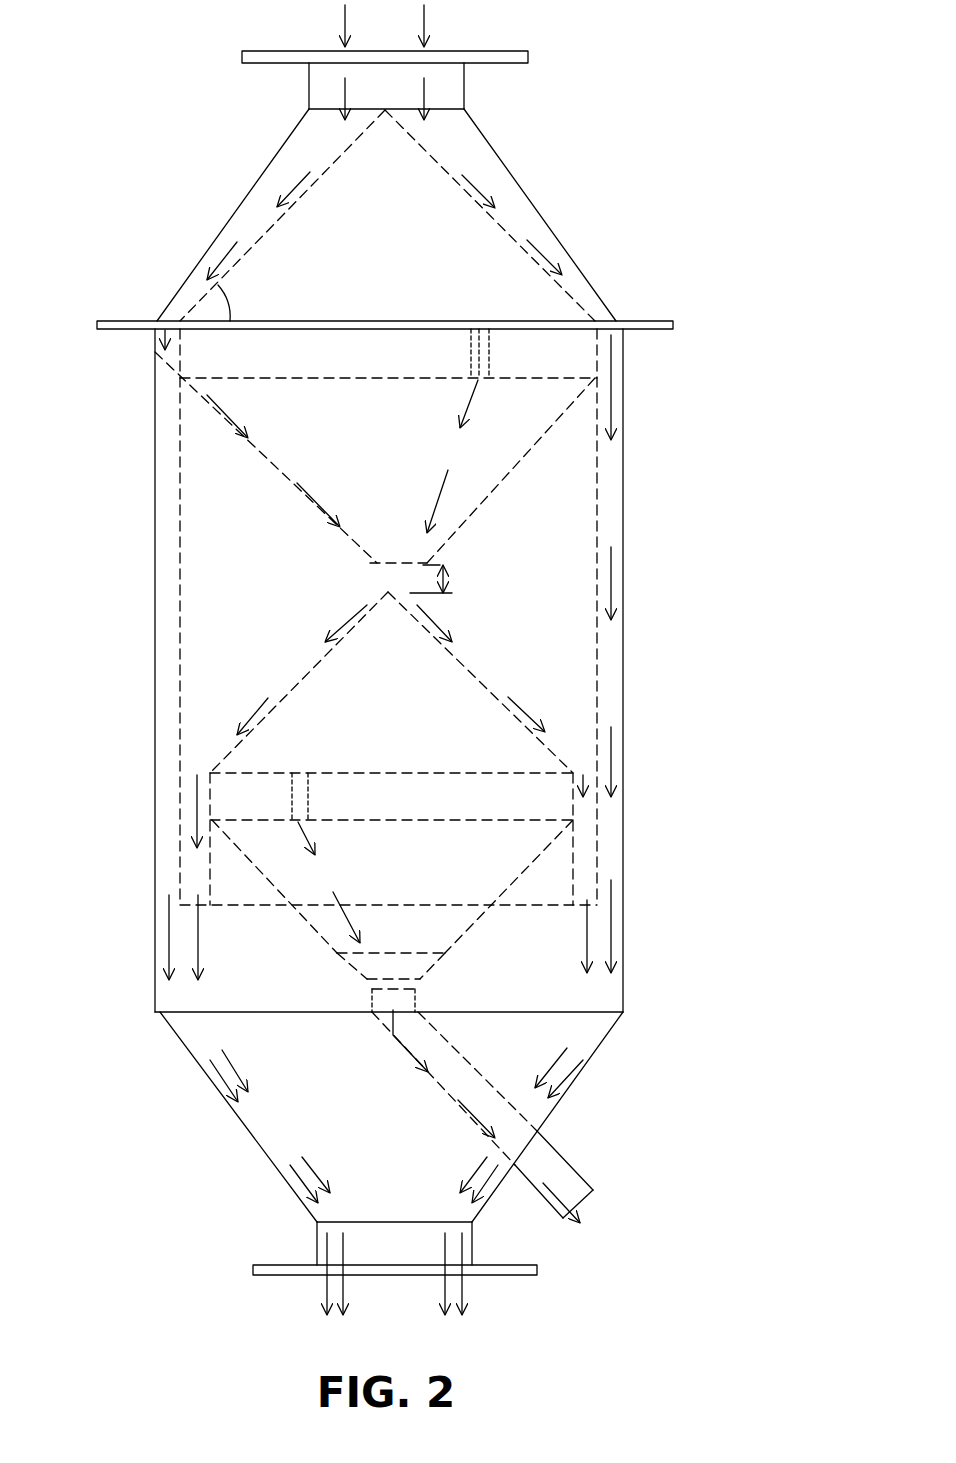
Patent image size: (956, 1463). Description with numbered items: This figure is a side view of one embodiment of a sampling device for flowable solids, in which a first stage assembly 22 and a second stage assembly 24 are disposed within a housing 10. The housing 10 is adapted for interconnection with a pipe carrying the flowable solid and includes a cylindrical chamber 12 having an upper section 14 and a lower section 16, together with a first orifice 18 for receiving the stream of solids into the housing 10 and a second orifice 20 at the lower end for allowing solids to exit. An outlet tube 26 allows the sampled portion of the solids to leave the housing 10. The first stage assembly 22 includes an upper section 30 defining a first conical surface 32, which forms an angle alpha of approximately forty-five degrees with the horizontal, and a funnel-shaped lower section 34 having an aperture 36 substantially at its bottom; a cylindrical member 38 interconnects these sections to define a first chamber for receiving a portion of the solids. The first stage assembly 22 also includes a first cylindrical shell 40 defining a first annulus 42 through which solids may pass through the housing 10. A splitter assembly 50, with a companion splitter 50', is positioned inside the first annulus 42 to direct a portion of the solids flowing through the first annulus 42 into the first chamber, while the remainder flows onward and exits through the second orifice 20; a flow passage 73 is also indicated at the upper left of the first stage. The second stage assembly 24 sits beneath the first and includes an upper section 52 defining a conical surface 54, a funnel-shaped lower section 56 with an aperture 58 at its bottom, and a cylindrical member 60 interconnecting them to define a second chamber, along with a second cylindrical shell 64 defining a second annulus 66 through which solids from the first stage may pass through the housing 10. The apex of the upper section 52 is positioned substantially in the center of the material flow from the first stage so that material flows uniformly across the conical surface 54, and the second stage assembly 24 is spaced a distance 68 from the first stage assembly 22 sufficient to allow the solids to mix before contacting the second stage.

The housing 10 is at (648, 617).
The cylindrical chamber 12 is at (577, 487).
The upper section 14 is at (523, 210).
The lower section 16 is at (582, 1050).
The first orifice 18 is at (447, 55).
The second orifice 20 is at (432, 1282).
The first stage assembly 22 is at (602, 335).
The second stage assembly 24 is at (210, 792).
The outlet tube 26 is at (570, 1170).
The upper section 30 is at (413, 251).
The first conical surface 32 is at (268, 263).
The funnel-shaped lower section 34 is at (408, 445).
The aperture 36 is at (372, 565).
The cylindrical member 38 is at (335, 365).
The first cylindrical shell 40 is at (180, 567).
The first annulus 42 is at (157, 625).
The splitter assembly 50 is at (234, 455).
The inlet passage slots 50' is at (497, 378).
The upper section 52 is at (392, 691).
The conical surface 54 is at (483, 690).
The funnel-shaped lower section 56 is at (415, 873).
The aperture 58 is at (372, 985).
The cylindrical member 60 is at (427, 811).
The second cylindrical shell 64 is at (210, 855).
The second annulus 66 is at (193, 885).
The distance 68 is at (448, 579).
The flow passage 73 is at (222, 380).